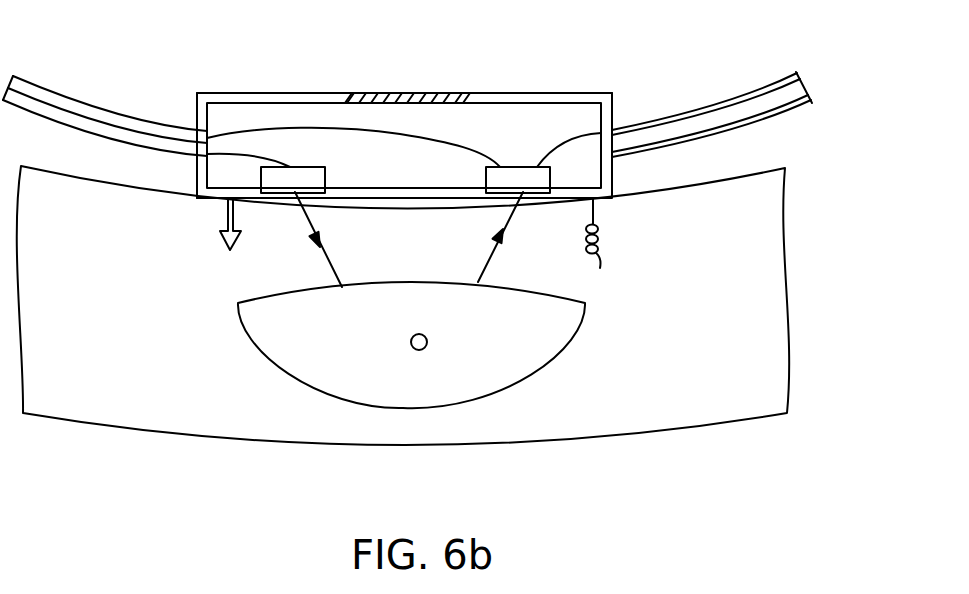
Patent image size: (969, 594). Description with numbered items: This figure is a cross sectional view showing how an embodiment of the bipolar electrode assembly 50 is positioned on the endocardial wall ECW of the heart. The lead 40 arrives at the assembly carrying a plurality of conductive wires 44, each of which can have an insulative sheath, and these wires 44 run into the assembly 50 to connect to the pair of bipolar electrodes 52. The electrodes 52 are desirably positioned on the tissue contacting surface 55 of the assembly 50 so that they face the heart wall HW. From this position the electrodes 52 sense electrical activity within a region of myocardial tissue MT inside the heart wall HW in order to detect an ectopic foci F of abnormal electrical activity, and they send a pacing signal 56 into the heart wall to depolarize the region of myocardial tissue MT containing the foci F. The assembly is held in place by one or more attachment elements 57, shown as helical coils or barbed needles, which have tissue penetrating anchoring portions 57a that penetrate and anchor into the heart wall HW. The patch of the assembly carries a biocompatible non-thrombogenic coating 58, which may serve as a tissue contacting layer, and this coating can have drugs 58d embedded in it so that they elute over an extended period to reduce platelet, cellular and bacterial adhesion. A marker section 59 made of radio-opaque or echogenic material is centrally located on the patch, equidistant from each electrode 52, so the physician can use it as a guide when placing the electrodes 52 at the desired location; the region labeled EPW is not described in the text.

The lead 40 is at (802, 72).
The conductive wires 44 is at (95, 110).
The electrode assembly 50 is at (567, 90).
The bipolar electrodes 52 is at (405, 180).
The tissue contacting surface 55 is at (217, 200).
The pacing signal 56 is at (303, 218).
The attachment elements 57 is at (604, 241).
The tissue penetrating anchoring portions 57a is at (222, 215).
The biocompatible non-thrombogenic coating 58 is at (290, 95).
The drugs 58d is at (404, 145).
The marker section 59 is at (415, 92).
The endocardial wall ECW is at (730, 202).
The myocardial tissue MT is at (316, 374).
The foci F is at (422, 350).
The heart wall HW is at (727, 312).
The epidermis wall EPW is at (695, 403).